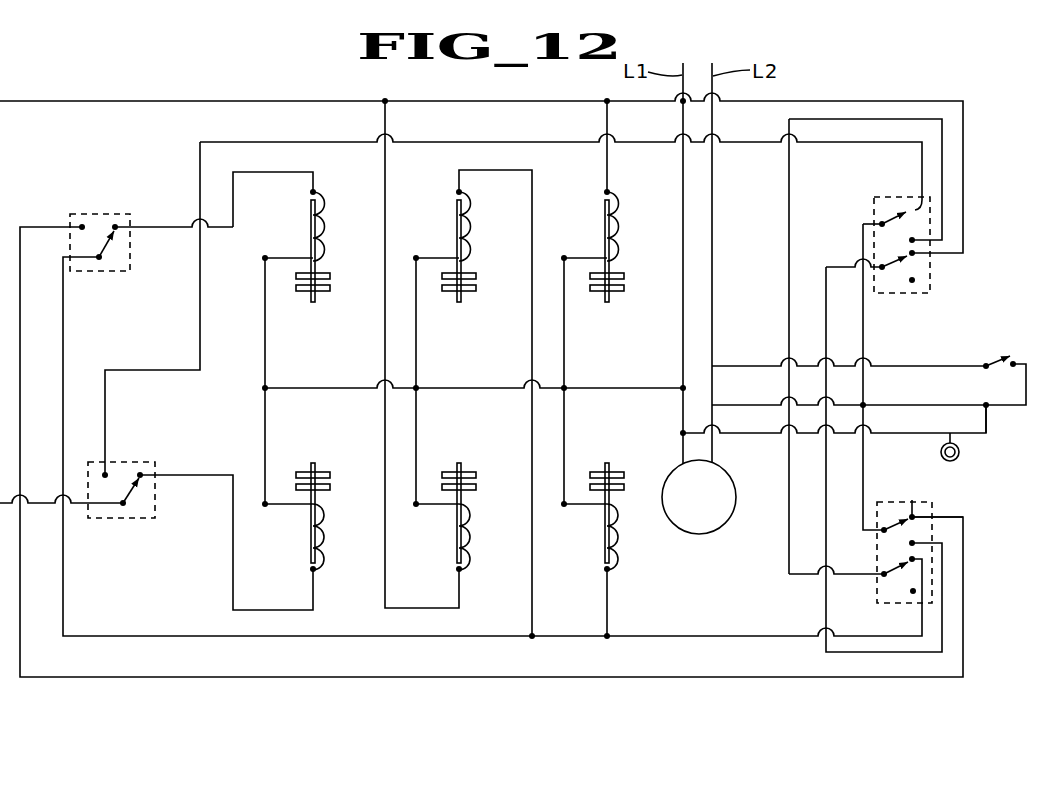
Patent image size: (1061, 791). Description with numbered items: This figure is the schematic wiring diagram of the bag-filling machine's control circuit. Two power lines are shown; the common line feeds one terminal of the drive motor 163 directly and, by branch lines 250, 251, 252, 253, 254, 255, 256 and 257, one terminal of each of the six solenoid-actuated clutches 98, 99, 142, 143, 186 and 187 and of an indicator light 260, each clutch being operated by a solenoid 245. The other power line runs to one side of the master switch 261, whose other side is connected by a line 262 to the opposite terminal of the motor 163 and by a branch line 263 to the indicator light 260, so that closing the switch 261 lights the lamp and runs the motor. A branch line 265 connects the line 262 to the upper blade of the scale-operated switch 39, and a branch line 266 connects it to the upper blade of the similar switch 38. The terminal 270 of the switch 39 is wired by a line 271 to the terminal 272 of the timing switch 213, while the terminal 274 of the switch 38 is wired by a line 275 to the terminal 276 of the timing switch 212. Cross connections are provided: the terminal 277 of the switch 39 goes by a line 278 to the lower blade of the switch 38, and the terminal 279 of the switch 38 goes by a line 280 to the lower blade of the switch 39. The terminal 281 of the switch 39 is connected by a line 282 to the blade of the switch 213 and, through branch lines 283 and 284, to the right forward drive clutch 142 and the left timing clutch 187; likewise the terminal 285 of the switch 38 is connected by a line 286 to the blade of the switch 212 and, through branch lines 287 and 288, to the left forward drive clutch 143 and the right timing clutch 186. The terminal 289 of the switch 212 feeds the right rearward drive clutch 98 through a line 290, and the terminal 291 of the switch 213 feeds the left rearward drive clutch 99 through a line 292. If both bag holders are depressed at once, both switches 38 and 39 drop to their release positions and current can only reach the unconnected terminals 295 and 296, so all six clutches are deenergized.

The line 282 is at (522, 100).
The line 271 is at (253, 143).
The line 290 is at (262, 172).
The single pole, double throw microswitch 212 is at (105, 213).
The terminal 276 is at (82, 225).
The line 275 is at (510, 678).
The terminal 289 is at (116, 226).
The line 286 is at (64, 329).
The branch line 255 is at (264, 330).
The branch line 256 is at (267, 418).
The branch line 250 is at (346, 362).
The solenoid 245 is at (353, 196).
The right rearward drive clutch 98 is at (334, 289).
The left rearward drive clutch 99 is at (334, 476).
The right timing clutch 186 is at (480, 283).
The left timing clutch 187 is at (524, 434).
The right side forward drive clutch 142 is at (629, 287).
The left forward drive clutch 143 is at (629, 476).
The branch line 284 is at (388, 157).
The branch line 288 is at (533, 573).
The branch line 283 is at (606, 156).
The branch line 253 is at (418, 364).
The branch line 254 is at (418, 410).
The branch line 251 is at (566, 318).
The branch line 252 is at (566, 408).
The branch line 287 is at (608, 598).
The line 292 is at (232, 551).
The terminal 291 is at (141, 474).
The single pole, double throw switch 213 is at (123, 462).
The terminal 272 is at (105, 473).
The drive motor 163 is at (681, 510).
The branch line 257 is at (755, 434).
The branch line 263 is at (987, 418).
The indicator light 260 is at (960, 451).
The line 262 is at (1026, 383).
The master switch 261 is at (992, 357).
The line 278 is at (788, 254).
The terminal 277 is at (914, 240).
The terminal 281 is at (914, 254).
The unconnected terminal 296 is at (914, 280).
The terminal 270 is at (916, 208).
The switch 39 is at (930, 215).
The branch line 265 is at (864, 316).
The branch line 266 is at (864, 470).
The line 280 is at (825, 597).
The terminal 279 is at (914, 543).
The terminal 274 is at (912, 500).
The double pole, double throw switch 38 is at (932, 506).
The terminal 285 is at (914, 560).
The unconnected terminal 295 is at (913, 593).